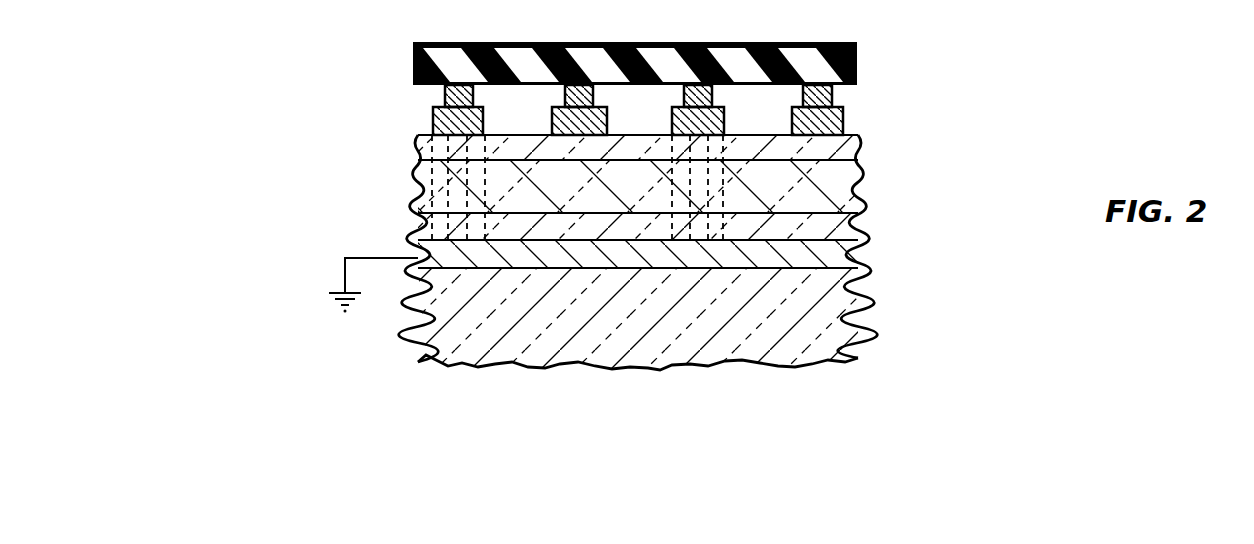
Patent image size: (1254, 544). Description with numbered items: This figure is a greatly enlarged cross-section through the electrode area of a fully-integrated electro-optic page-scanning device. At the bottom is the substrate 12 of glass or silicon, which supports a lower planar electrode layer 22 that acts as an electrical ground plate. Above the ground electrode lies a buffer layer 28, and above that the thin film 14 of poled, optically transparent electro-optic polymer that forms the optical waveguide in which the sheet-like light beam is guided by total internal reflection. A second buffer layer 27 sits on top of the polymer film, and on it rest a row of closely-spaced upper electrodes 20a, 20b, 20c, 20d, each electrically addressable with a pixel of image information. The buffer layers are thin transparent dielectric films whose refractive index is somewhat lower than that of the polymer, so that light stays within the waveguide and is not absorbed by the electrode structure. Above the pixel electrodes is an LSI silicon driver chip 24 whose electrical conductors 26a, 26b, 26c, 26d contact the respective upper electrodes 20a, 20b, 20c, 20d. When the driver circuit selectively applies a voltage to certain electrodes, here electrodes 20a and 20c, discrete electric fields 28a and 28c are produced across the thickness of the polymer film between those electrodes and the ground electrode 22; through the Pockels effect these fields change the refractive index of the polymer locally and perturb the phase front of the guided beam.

The substrate 12 is at (843, 320).
The electro-optic polymer film 14 is at (851, 173).
The upper electrode 20a is at (433, 121).
The upper electrode 20b is at (627, 118).
The upper electrode 20c is at (747, 118).
The upper electrode 20d is at (843, 121).
The lower planar electrode layer 22 is at (858, 243).
The LSI silicon driver chip 24 is at (852, 53).
The electrical conductor 26a is at (444, 96).
The electrical conductor 26b is at (565, 96).
The electrical conductor 26c is at (733, 42).
The electrical conductor 26d is at (833, 92).
The buffer layer 27 is at (418, 149).
The buffer layer 28 is at (420, 229).
The electric field 28a is at (425, 186).
The electric field 28c is at (707, 186).